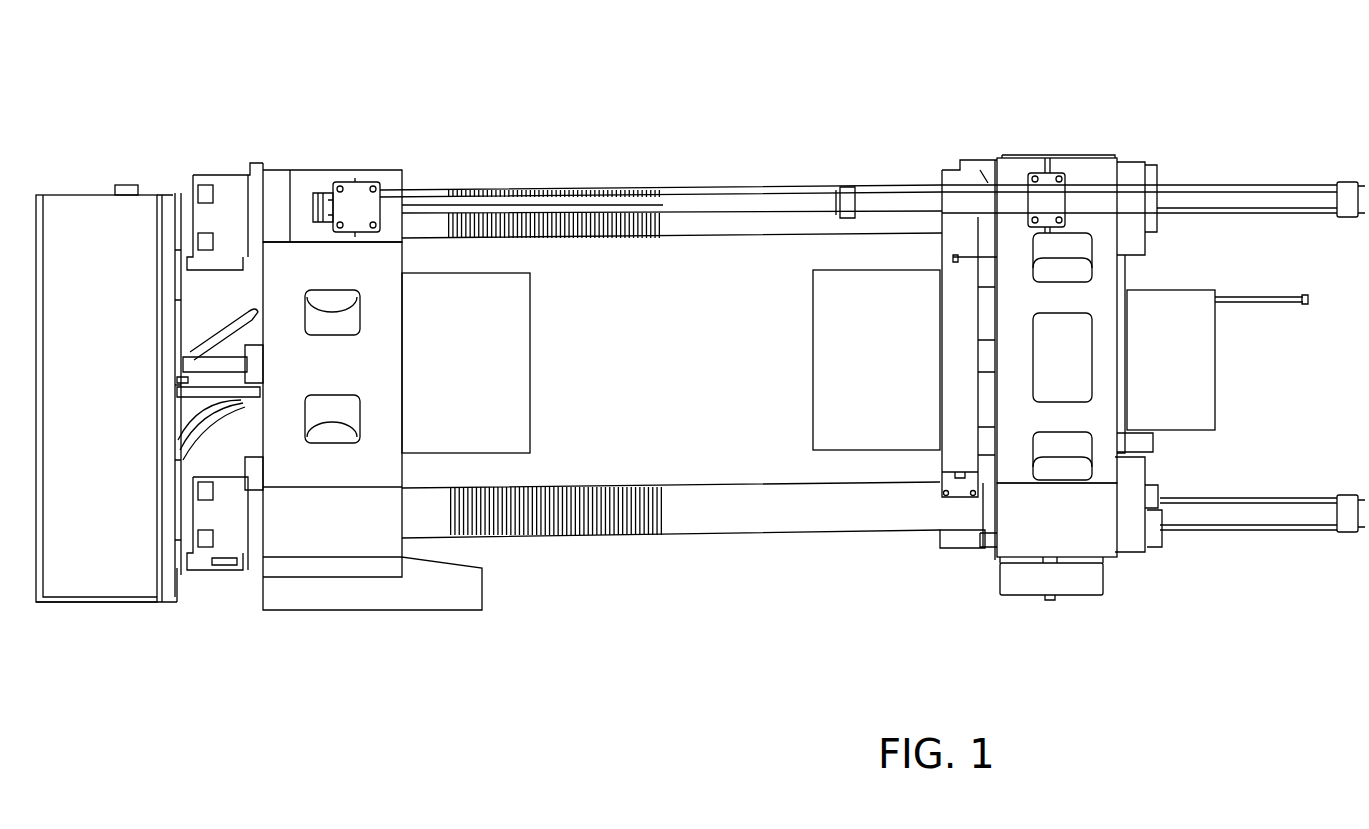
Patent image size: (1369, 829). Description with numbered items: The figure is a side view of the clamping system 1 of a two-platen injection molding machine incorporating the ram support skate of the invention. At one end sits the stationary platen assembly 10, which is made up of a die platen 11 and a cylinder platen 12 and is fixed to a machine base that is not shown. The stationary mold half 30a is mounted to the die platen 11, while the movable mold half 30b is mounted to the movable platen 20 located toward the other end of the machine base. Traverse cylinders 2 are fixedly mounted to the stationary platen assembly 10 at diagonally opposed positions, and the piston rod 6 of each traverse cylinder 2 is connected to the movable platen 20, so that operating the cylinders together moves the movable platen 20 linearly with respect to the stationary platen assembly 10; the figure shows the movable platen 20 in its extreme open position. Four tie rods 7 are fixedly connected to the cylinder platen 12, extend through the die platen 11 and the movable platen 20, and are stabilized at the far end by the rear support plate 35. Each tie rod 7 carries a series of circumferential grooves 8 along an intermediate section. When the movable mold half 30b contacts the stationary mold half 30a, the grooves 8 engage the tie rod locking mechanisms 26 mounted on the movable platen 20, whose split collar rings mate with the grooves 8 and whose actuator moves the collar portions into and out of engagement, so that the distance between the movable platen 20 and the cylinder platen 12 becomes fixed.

The clamping system 1 is at (887, 80).
The traverse cylinders 2 is at (1215, 193).
The piston rod 6 is at (415, 198).
The tie rods 7 is at (688, 190).
The circumferential grooves 8 is at (553, 192).
The stationary platen assembly 10 is at (1063, 143).
The die platen 11 is at (953, 452).
The cylinder platen 12 is at (1098, 537).
The movable platen 20 is at (297, 183).
The tie rod locking mechanisms 26 is at (222, 185).
The stationary mold half 30a is at (876, 360).
The movable mold half 30b is at (466, 363).
The rear support plate 35 is at (170, 193).